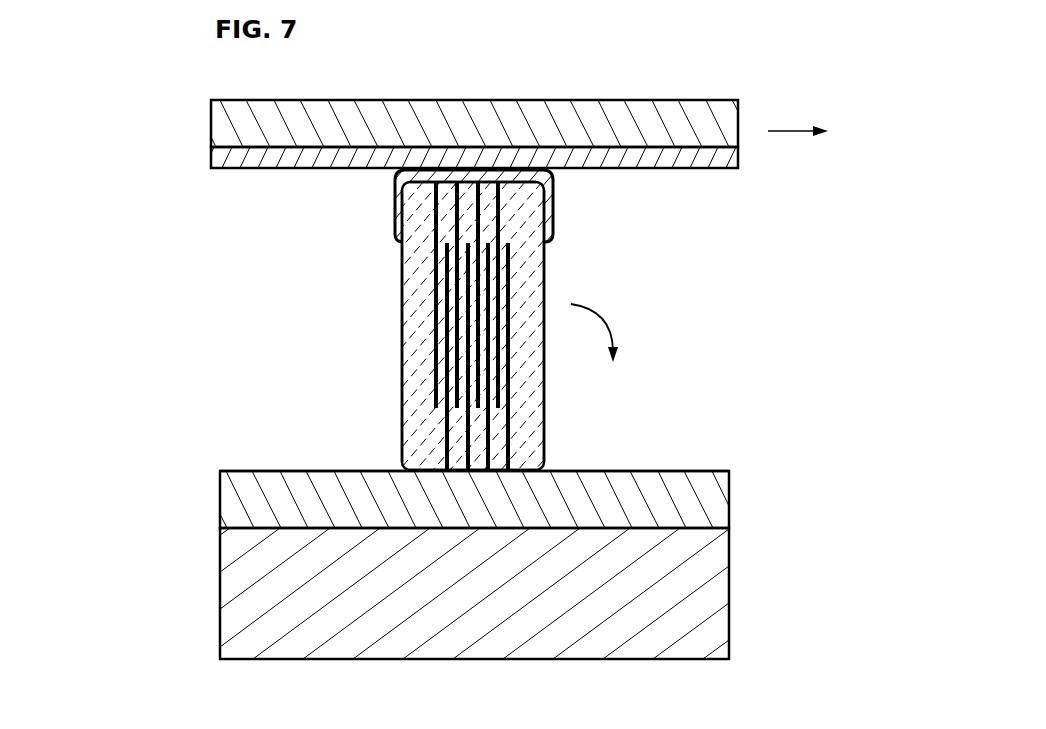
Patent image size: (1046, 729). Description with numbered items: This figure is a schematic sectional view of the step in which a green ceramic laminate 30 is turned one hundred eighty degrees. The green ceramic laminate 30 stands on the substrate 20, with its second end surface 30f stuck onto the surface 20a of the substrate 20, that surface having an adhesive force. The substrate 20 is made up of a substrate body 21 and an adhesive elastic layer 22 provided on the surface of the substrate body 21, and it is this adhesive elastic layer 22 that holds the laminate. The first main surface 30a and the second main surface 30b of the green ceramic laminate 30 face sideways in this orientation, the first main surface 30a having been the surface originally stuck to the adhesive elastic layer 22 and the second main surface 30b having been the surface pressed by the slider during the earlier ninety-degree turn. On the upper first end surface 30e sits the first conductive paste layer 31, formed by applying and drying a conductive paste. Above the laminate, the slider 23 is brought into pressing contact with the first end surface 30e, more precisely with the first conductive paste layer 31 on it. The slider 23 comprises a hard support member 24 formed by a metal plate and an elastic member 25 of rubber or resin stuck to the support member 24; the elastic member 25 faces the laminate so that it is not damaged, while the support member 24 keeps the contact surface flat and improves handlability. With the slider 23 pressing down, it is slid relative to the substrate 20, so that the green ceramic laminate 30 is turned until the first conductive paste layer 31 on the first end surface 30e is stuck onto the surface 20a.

The substrate 20 is at (581, 511).
The surface of substrate 20a is at (697, 470).
The substrate body 21 is at (729, 588).
The adhesive elastic layer 22 is at (729, 502).
The slider 23 is at (380, 148).
The support member 24 is at (210, 125).
The elastic member 25 is at (210, 163).
The green ceramic laminate 30 is at (467, 380).
The first main surface 30a is at (402, 333).
The second main surface 30b is at (545, 397).
The first end surface 30e is at (468, 182).
The second end surface 30f is at (468, 470).
The first conductive paste layer 31 is at (553, 198).